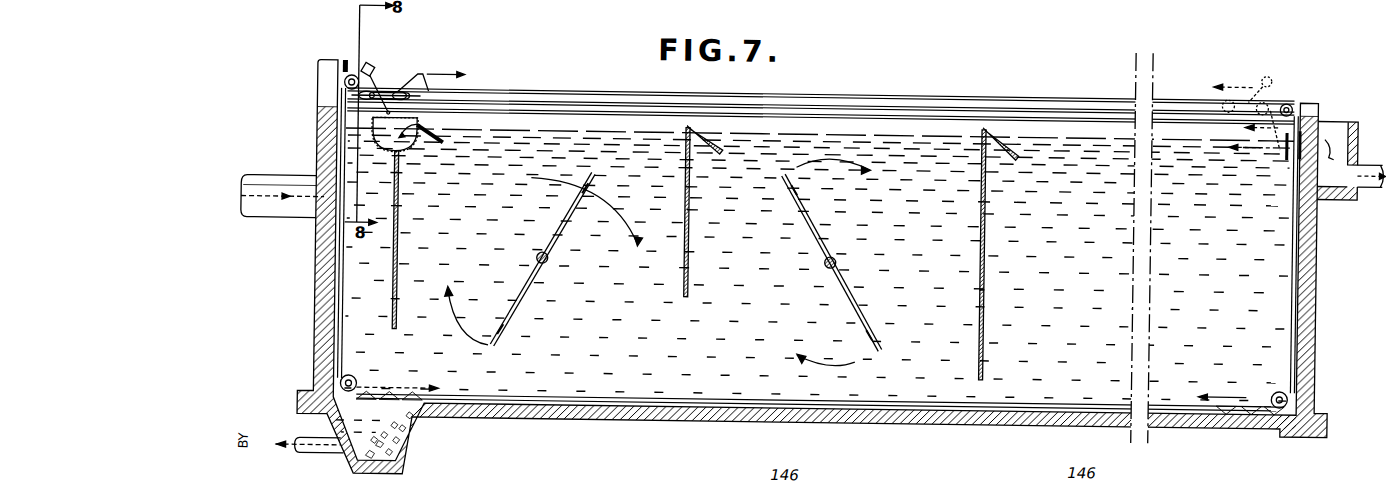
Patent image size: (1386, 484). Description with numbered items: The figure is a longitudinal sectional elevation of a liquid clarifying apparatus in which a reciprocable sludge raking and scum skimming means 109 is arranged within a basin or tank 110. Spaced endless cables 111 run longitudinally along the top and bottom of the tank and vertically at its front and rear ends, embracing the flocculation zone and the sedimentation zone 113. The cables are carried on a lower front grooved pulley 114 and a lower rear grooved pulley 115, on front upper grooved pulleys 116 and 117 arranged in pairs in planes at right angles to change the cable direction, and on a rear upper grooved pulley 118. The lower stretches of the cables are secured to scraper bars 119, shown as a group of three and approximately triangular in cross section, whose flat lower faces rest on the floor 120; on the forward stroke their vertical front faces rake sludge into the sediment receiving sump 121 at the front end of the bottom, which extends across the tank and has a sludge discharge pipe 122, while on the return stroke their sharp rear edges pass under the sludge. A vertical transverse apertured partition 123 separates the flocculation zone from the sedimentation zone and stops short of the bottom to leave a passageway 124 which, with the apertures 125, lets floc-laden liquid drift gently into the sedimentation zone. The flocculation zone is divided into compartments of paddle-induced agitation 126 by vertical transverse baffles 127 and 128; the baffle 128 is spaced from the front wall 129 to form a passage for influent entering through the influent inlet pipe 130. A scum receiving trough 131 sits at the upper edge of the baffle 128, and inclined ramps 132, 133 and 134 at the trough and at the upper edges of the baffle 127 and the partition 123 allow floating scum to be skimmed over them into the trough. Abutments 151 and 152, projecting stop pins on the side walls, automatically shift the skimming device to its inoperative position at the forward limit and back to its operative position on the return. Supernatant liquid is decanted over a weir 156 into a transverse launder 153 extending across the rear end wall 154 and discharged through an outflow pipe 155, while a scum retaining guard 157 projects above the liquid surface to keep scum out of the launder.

The sludge raking and scum skimming means 109 is at (338, 276).
The tank 110 is at (301, 401).
The endless cables 111 is at (509, 398).
The sedimentation zone 113 is at (1084, 280).
The lower front grooved pulley 114 is at (361, 380).
The lower rear grooved pulley 115 is at (1278, 380).
The front upper grooved pulley 116 is at (346, 62).
The front upper grooved pulley 117 is at (355, 78).
The rear upper grooved pulley 118 is at (1286, 89).
The scraper bars 119 is at (1221, 404).
The floor 120 is at (897, 404).
The sediment receiving sump 121 is at (413, 444).
The sludge discharge pipe 122 is at (307, 455).
The apertured partition 123 is at (987, 243).
The passageway 124 is at (979, 389).
The apertures 125 is at (988, 325).
The compartments of paddle-induced agitation 126 is at (664, 260).
The baffle 127 is at (685, 287).
The baffle 128 is at (400, 261).
The front wall 129 is at (317, 333).
The influent inlet pipe 130 is at (277, 178).
The scum receiving trough 131 is at (403, 126).
The ramp 132 is at (444, 138).
The ramp 133 is at (712, 143).
The ramp 134 is at (1000, 139).
The abutment 151 is at (385, 112).
The abutment 152 is at (1242, 110).
The transverse launder 153 is at (1327, 121).
The rear end wall 154 is at (1314, 284).
The outflow pipe 155 is at (1374, 176).
The weir 156 is at (1302, 130).
The scum retaining guard 157 is at (1284, 140).